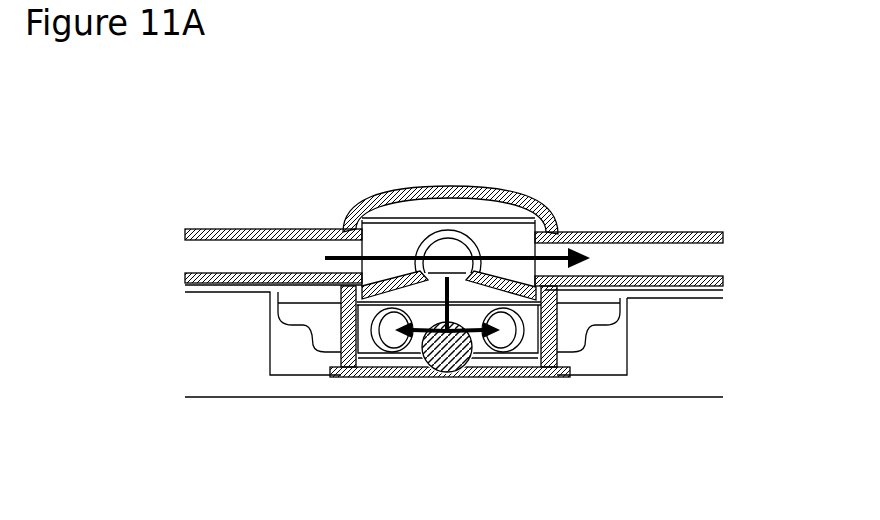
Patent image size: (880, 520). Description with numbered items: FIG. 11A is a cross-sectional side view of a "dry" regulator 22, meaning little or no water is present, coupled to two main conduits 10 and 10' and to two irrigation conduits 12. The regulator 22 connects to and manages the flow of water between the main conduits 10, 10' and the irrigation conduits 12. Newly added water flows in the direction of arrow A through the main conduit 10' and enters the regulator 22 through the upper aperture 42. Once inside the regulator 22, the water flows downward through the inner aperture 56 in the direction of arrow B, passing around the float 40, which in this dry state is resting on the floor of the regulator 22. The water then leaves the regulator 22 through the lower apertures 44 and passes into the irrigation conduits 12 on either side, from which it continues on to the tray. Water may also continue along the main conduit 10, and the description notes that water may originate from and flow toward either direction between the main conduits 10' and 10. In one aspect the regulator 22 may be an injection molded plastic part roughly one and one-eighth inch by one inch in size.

The main conduit 10 is at (680, 214).
The main conduit 10' is at (236, 202).
The irrigation conduit 12 is at (313, 318).
The regulator 22 is at (488, 188).
The float 40 is at (433, 365).
The upper aperture 42 is at (533, 248).
The lower aperture 44 is at (377, 345).
The inner aperture 56 is at (497, 277).
The arrow A is at (447, 256).
The arrow B is at (436, 345).